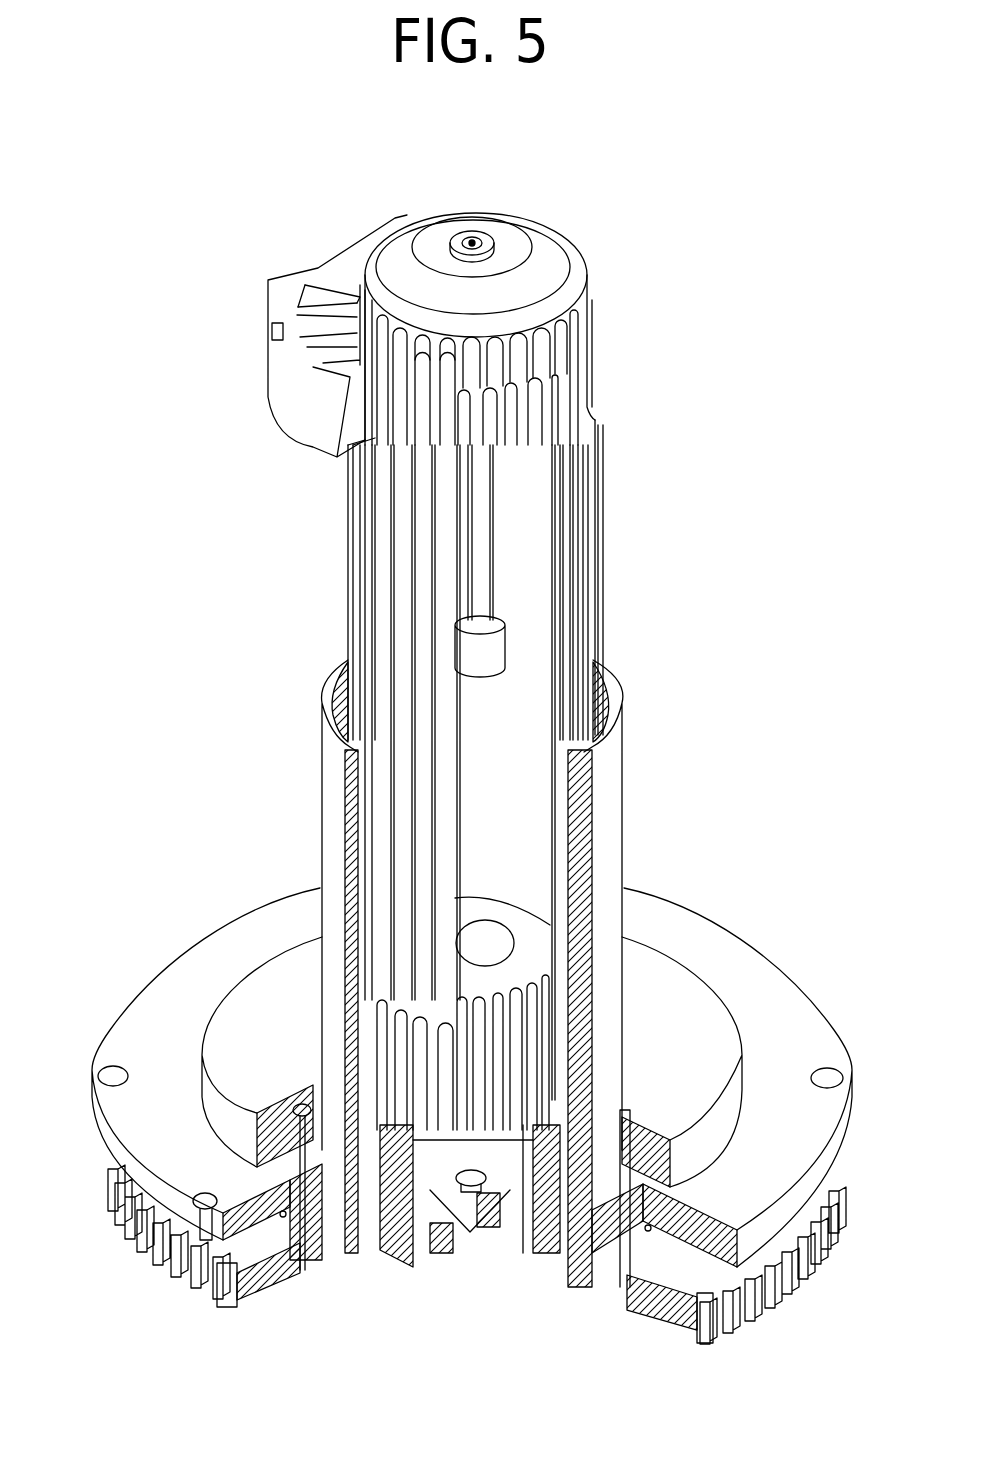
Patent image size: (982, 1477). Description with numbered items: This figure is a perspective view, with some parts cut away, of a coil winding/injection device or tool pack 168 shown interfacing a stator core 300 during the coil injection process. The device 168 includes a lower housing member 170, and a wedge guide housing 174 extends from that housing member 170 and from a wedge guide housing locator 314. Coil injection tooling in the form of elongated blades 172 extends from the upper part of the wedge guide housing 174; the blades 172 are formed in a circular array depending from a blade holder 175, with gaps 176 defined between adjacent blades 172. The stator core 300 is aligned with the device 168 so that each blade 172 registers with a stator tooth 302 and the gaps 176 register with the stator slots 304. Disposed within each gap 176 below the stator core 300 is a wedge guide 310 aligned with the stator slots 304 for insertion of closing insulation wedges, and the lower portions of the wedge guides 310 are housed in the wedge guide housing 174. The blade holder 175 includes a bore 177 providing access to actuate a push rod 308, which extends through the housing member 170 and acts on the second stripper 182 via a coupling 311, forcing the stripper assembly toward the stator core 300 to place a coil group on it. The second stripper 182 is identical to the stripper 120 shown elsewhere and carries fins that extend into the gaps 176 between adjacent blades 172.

The stripper 120 is at (585, 268).
The coil winding/injection device 168 is at (699, 399).
The lower housing member 170 is at (707, 980).
The elongated blades 172 is at (587, 353).
The wedge guide housing 174 is at (612, 687).
The blade holder 175 is at (495, 1223).
The gaps 176 is at (348, 522).
The bore 177 is at (500, 897).
The second stripper 182 is at (575, 255).
The stator core 300 is at (355, 237).
The stator tooth 302 is at (342, 293).
The stator slots 304 is at (315, 299).
The push rod 308 is at (497, 552).
The wedge guide 310 is at (603, 467).
The coupling 311 is at (507, 643).
The wedge guide housing locator 314 is at (712, 920).